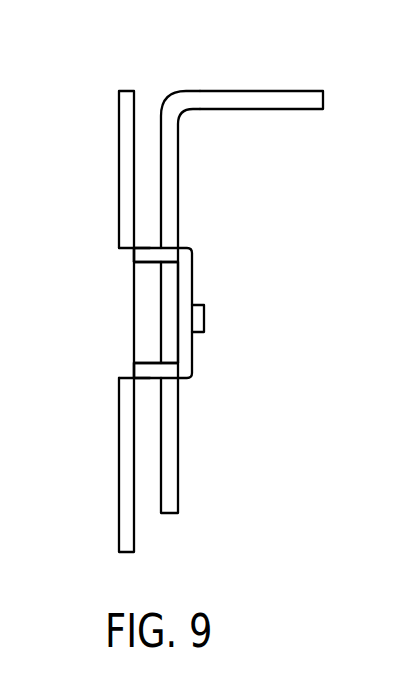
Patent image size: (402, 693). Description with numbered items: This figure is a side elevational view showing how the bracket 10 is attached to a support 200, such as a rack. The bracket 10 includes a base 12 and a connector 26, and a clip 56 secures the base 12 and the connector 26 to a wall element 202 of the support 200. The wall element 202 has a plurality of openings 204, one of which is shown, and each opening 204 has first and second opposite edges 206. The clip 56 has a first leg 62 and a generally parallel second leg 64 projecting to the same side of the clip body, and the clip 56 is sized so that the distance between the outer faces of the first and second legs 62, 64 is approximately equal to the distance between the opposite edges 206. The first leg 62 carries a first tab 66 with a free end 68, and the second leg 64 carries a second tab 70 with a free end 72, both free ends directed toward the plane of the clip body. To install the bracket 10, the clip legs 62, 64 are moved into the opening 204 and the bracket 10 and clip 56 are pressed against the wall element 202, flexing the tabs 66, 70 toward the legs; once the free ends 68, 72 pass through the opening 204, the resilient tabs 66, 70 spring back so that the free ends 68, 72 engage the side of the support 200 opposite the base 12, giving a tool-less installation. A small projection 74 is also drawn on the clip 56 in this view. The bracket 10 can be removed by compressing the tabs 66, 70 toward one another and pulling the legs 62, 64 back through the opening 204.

The bracket 10 is at (231, 448).
The base 12 is at (180, 140).
The connector 26 is at (243, 98).
The clip 56 is at (193, 278).
The first leg 62 is at (147, 265).
The second leg 64 is at (150, 362).
The first tab 66 is at (149, 247).
The free end of first tab 68 is at (140, 249).
The second tab 70 is at (163, 381).
The free end of second tab 72 is at (142, 381).
The projection 74 is at (204, 322).
The support 200 is at (130, 527).
The wall element 202 is at (128, 101).
The opening 204 is at (99, 307).
The first and second opposite edges 206 is at (134, 250).